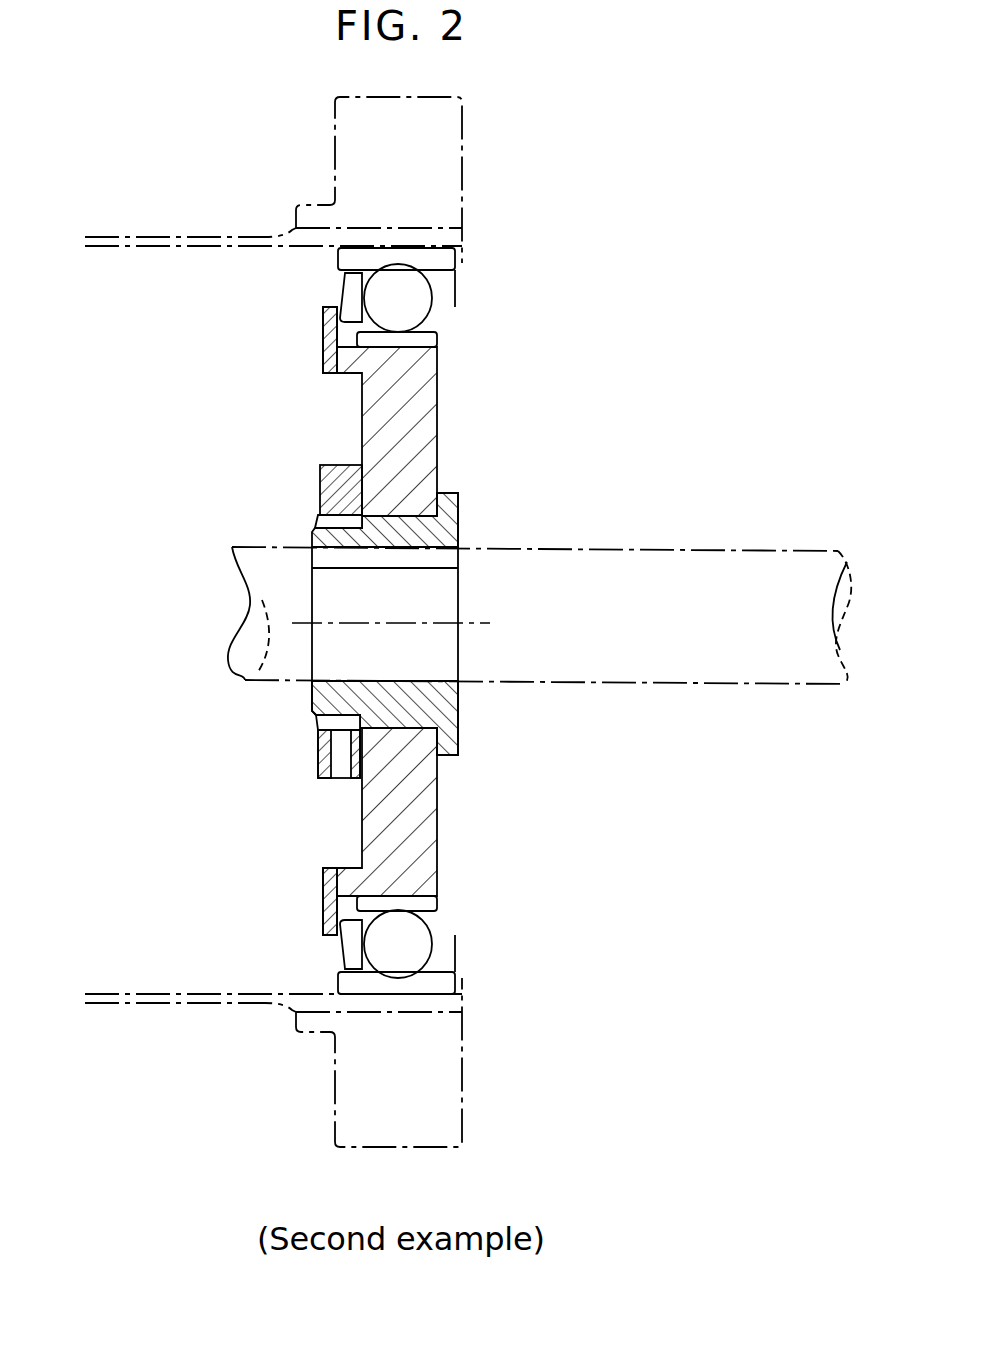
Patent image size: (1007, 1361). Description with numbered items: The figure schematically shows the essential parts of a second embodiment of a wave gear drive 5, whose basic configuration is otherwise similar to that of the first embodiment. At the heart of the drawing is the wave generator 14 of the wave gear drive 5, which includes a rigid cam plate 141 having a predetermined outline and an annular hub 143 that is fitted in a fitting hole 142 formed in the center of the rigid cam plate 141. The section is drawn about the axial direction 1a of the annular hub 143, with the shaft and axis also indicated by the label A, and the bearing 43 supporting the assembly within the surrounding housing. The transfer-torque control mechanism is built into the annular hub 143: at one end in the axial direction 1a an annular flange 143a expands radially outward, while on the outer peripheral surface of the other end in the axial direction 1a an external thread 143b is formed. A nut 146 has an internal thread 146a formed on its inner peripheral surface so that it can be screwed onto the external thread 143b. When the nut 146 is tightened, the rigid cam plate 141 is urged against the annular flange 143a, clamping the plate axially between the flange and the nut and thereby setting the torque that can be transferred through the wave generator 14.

The wave gear drive 5 is at (567, 240).
The bearing 43 is at (465, 505).
The wave generator 14 is at (553, 662).
The axial direction 1a is at (330, 625).
The axial direction A is at (728, 583).
The rigid cam plate 141 is at (407, 827).
The annular hub 143 is at (458, 708).
The annular flange 143a is at (453, 493).
The external thread 143b is at (315, 712).
The fitting hole 142 is at (458, 727).
The nut 146 is at (312, 778).
The internal thread 146a is at (312, 728).